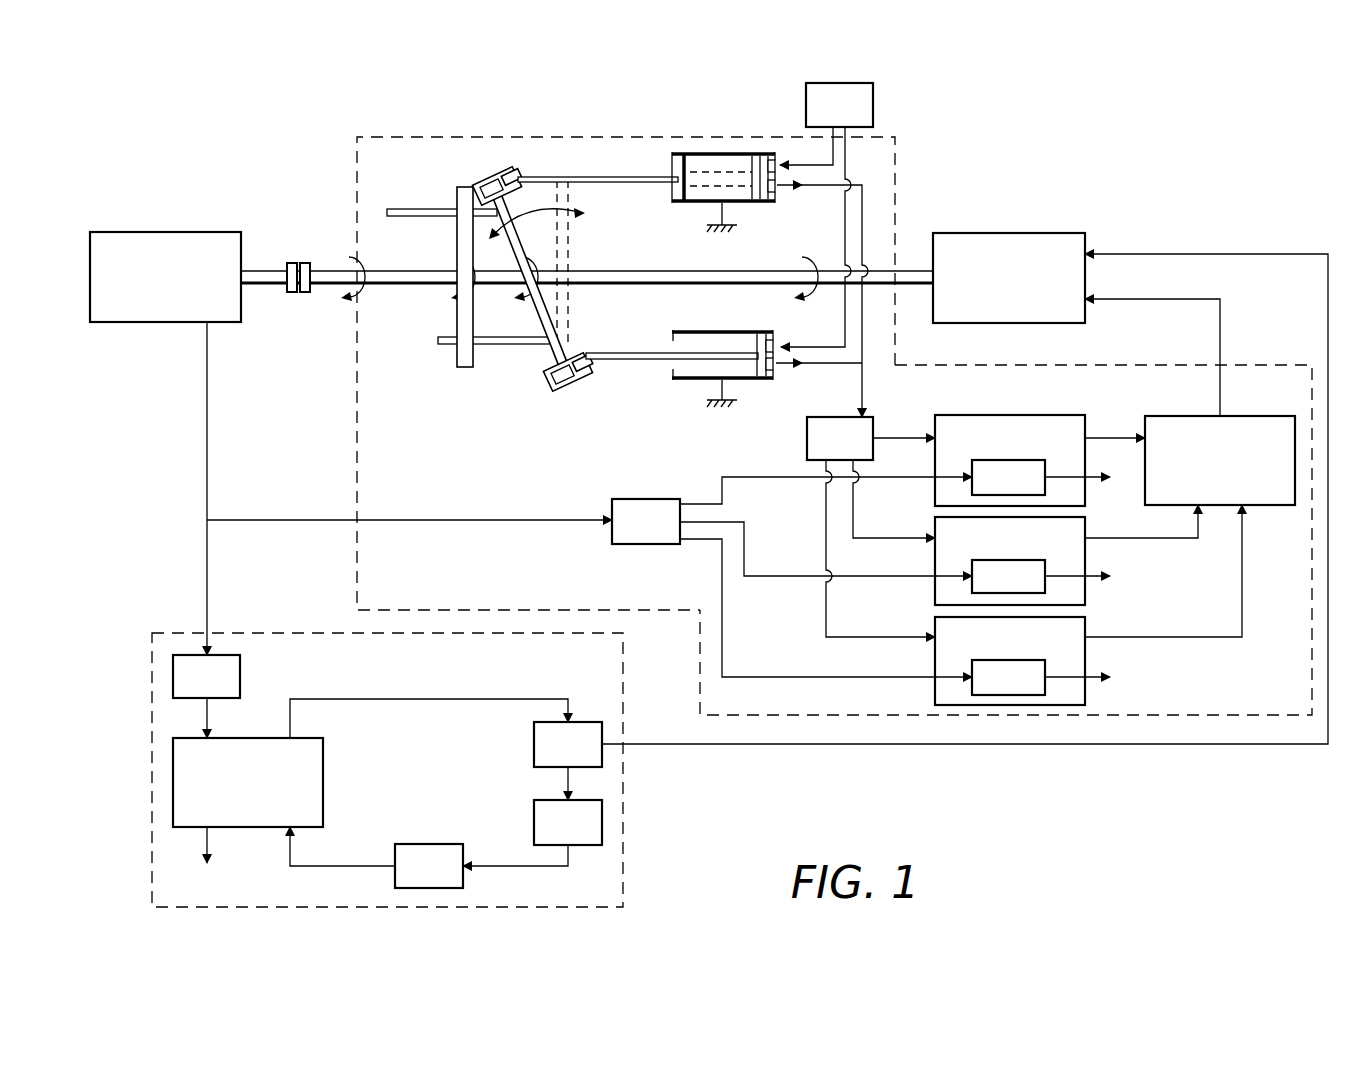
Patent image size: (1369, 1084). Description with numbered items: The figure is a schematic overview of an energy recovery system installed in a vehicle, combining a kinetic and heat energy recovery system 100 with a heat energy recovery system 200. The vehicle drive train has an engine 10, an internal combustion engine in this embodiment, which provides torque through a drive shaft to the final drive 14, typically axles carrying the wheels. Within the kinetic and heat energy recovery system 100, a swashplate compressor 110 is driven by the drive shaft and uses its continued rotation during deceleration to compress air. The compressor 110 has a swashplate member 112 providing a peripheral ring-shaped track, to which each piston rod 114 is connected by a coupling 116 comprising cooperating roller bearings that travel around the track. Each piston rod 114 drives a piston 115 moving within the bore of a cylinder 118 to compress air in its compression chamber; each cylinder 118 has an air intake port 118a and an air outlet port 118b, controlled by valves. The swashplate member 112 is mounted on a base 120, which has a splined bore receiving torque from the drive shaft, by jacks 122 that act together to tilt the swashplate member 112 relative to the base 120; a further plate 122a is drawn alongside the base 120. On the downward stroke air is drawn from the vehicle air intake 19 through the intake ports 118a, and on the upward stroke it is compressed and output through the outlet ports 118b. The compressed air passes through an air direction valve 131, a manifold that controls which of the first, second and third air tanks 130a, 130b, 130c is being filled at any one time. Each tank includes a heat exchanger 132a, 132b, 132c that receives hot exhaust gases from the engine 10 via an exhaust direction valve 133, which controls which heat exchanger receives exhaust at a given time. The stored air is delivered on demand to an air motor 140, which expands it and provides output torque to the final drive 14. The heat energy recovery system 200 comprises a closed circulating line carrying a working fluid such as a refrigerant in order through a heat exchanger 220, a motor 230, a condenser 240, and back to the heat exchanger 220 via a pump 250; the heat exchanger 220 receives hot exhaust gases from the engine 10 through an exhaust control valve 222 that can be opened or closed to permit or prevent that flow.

The engine 10 is at (165, 277).
The final drive 14 is at (1009, 278).
The hydraulic pressure source 19 is at (839, 105).
The kinetic and heat energy recovery system 100 is at (1006, 540).
The swashplate compressor 110 is at (454, 153).
The swashplate member 112 is at (527, 233).
The piston rod 114 is at (610, 175).
The piston 115 is at (672, 187).
The coupling 116 is at (500, 168).
The cylinder 118 is at (700, 150).
The air intake port 118a is at (782, 163).
The air outlet port 118b is at (785, 201).
The base 120 is at (456, 322).
The jack 122 is at (512, 345).
The upper support plate 122a is at (405, 208).
The air direction valve 131 is at (840, 438).
The exhaust direction valve 133 is at (646, 521).
The first air tank 130a is at (1010, 460).
The heat exchanger 132a is at (1008, 477).
The second air tank 130b is at (1010, 561).
The heat exchanger 132b is at (1008, 576).
The third air tank 130c is at (1010, 661).
The heat exchanger 132c is at (1008, 677).
The air motor 140 is at (1220, 460).
The heat energy recovery system 200 is at (387, 770).
The heat exchanger 220 is at (248, 782).
The exhaust control valve 222 is at (206, 676).
The motor 230 is at (568, 744).
The condenser 240 is at (568, 822).
The pump 250 is at (429, 866).